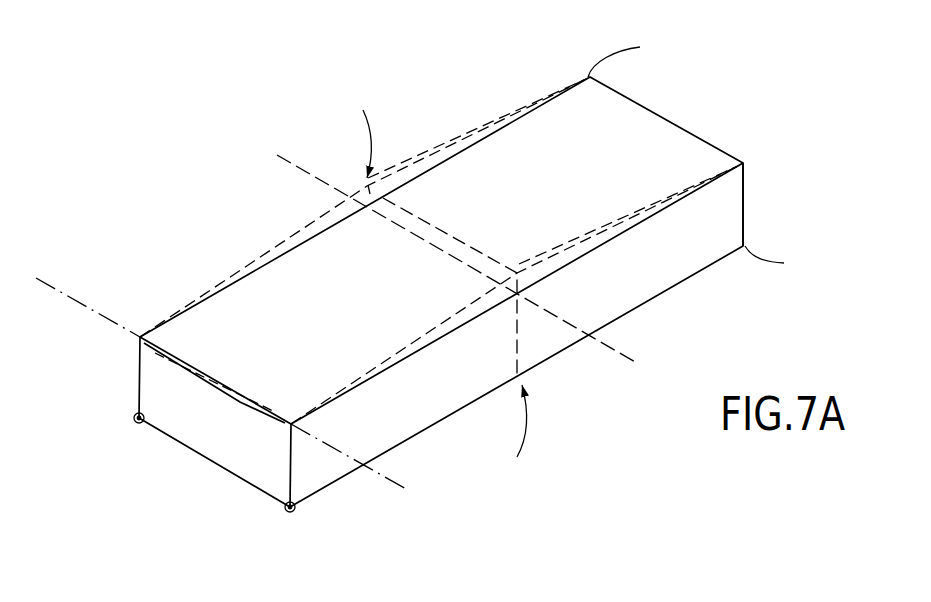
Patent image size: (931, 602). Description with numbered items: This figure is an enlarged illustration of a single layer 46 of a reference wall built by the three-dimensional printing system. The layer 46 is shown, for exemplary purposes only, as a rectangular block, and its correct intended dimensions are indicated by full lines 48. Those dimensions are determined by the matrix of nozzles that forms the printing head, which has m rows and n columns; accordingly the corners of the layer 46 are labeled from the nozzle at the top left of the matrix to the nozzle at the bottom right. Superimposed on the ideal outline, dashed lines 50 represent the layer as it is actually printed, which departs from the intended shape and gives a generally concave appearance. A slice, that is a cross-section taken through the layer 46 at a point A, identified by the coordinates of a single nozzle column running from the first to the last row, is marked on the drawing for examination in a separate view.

The layer 46 is at (182, 241).
The full lines 48 is at (746, 203).
The dashed lines 50 is at (595, 230).